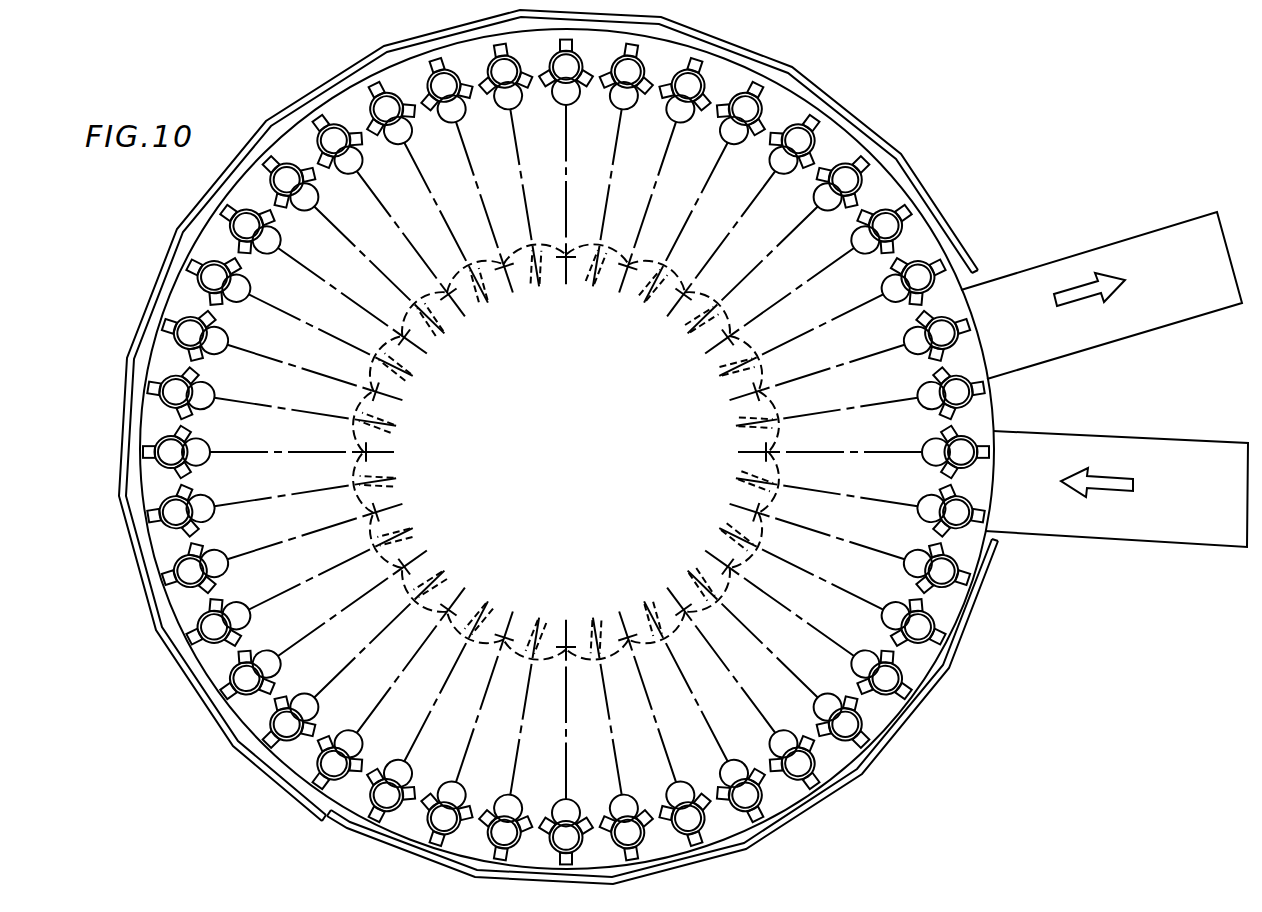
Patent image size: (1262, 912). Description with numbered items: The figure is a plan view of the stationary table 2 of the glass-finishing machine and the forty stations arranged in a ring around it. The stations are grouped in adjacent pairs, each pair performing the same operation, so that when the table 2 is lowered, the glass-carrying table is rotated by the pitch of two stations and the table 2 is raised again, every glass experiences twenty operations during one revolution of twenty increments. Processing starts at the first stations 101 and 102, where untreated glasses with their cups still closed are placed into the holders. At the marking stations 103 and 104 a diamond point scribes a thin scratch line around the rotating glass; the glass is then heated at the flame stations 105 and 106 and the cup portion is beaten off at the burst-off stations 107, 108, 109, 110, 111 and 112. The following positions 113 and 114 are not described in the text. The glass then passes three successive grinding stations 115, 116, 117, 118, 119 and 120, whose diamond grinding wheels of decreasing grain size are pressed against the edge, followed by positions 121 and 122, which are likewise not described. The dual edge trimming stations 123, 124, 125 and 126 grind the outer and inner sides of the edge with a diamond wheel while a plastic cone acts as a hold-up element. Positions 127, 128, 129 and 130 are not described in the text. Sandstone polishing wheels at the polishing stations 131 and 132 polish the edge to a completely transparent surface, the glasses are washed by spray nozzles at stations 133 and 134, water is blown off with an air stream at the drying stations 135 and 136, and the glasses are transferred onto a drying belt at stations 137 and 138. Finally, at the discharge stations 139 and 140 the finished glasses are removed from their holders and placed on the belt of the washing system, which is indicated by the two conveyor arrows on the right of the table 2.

The stationary table 2 is at (1018, 398).
The first station 101 is at (924, 451).
The first station 102 is at (919, 506).
The marking station 103 is at (906, 561).
The marking station 104 is at (884, 613).
The flame station 105 is at (853, 660).
The flame station 106 is at (776, 657).
The burst-off station 107 is at (740, 686).
The burst-off station 108 is at (726, 760).
The burst-off station 109 is at (658, 727).
The burst-off station 110 is at (613, 738).
The burst-off station 111 is at (564, 742).
The burst-off station 112 is at (508, 791).
The work station 113 is at (453, 777).
The work station 114 is at (399, 756).
The grinding station 115 is at (350, 727).
The grinding station 116 is at (305, 690).
The grinding station 117 is at (268, 647).
The grinding station 118 is at (239, 600).
The grinding station 119 is at (282, 542).
The grinding station 120 is at (272, 497).
The work station 121 is at (210, 447).
The work station 122 is at (215, 394).
The edge trimming station 123 is at (228, 339).
The edge trimming station 124 is at (250, 287).
The edge trimming station 125 is at (281, 240).
The edge trimming station 126 is at (318, 197).
The work station 127 is at (362, 163).
The work station 128 is at (411, 137).
The work station 129 is at (474, 176).
The work station 130 is at (515, 108).
The polishing station 131 is at (574, 162).
The polishing station 132 is at (626, 109).
The washing station 133 is at (681, 123).
The washing station 134 is at (735, 144).
The drying station 135 is at (784, 173).
The drying station 136 is at (829, 210).
The transfer station 137 is at (866, 253).
The transfer station 138 is at (897, 300).
The discharge station 139 is at (911, 350).
The discharge station 140 is at (922, 402).